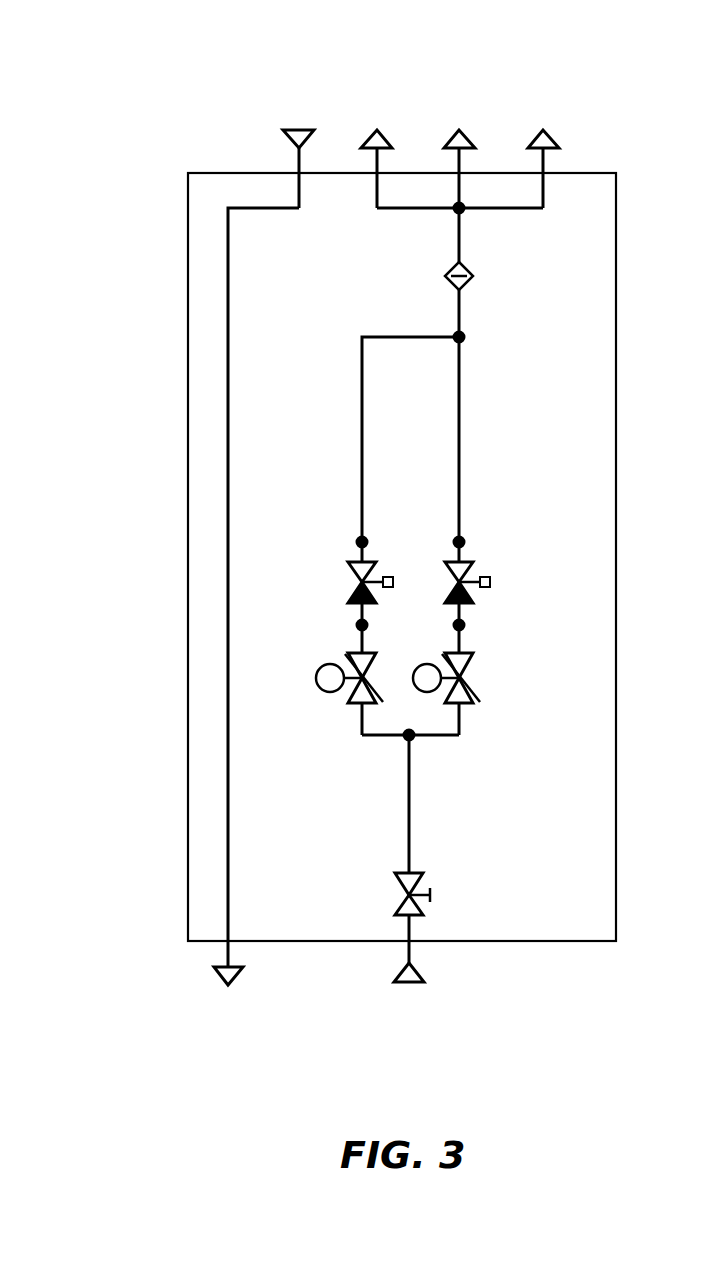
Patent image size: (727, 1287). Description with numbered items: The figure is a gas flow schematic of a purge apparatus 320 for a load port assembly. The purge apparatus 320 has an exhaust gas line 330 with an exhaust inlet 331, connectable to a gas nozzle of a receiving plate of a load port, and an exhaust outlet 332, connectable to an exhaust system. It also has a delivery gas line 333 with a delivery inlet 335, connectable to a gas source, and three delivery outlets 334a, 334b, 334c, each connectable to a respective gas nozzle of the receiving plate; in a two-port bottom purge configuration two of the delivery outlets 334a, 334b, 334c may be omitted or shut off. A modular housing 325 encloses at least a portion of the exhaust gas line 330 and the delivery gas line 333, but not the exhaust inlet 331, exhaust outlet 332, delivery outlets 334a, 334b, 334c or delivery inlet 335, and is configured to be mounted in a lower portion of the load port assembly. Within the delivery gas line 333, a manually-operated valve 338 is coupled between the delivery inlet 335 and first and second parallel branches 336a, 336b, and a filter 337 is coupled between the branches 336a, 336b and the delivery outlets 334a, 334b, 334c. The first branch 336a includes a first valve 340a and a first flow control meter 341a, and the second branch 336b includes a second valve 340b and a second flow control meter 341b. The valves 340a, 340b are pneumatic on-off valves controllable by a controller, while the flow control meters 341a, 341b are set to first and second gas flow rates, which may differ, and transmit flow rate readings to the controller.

The purge apparatus 320 is at (172, 50).
The modular housing 325 is at (187, 349).
The exhaust gas line 330 is at (230, 823).
The exhaust inlet 331 is at (288, 128).
The exhaust outlet 332 is at (222, 975).
The delivery gas line 333 is at (412, 818).
The delivery outlet 334a is at (369, 128).
The delivery outlet 334b is at (450, 128).
The delivery outlet 334c is at (535, 128).
The delivery inlet 335 is at (423, 968).
The first parallel branch 336a is at (360, 470).
The second parallel branch 336b is at (461, 469).
The filter 337 is at (474, 272).
The manually-operated valve 338 is at (423, 879).
The first valve 340a is at (357, 567).
The second valve 340b is at (467, 567).
The first flow control meter 341a is at (316, 671).
The second flow control meter 341b is at (469, 692).